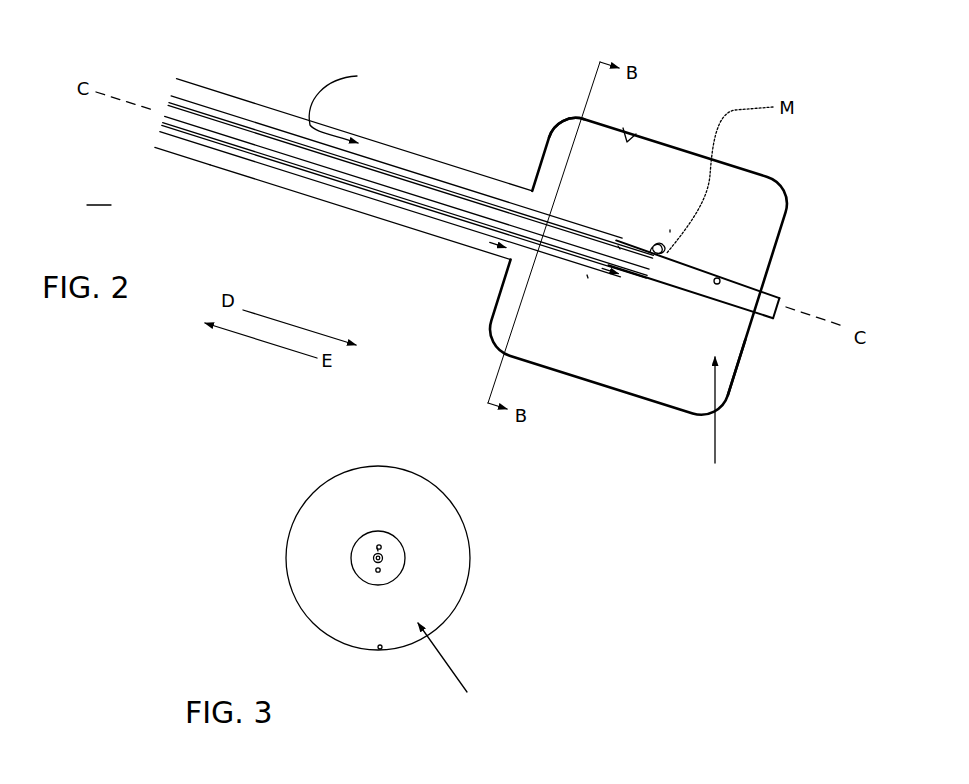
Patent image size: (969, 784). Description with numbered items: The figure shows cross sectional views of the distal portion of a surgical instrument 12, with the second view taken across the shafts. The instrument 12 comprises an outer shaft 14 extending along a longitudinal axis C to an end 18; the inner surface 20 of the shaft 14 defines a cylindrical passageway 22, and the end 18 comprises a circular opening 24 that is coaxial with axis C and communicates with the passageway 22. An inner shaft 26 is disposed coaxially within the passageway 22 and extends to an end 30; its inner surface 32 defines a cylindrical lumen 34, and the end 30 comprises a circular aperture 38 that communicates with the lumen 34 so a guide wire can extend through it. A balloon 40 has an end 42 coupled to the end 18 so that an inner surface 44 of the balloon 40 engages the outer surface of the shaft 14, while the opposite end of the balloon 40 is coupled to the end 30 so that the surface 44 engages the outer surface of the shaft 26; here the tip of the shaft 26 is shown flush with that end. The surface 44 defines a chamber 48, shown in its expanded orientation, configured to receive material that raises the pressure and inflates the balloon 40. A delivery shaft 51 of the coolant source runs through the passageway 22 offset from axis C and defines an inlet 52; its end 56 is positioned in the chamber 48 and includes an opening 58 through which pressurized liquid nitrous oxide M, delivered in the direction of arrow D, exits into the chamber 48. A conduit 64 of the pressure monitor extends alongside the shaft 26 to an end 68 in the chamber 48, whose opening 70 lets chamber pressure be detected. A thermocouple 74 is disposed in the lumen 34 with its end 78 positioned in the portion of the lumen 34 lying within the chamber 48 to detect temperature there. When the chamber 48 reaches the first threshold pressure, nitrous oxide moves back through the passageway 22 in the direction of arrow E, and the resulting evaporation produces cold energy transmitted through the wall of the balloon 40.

In FIG. 2, the surgical instrument 12 is at (99, 193).
In FIG. 2, the outer shaft 14 is at (442, 160).
In FIG. 2, the end 18 is at (306, 198).
In FIG. 2, the inner surface 20 is at (207, 167).
In FIG. 2, the passageway 22 is at (348, 106).
In FIG. 2, the circular opening 24 is at (505, 291).
In FIG. 2, the inner shaft 26 is at (758, 285).
In FIG. 3, the inner shaft 26 is at (446, 558).
In FIG. 2, the end 30 is at (738, 363).
In FIG. 2, the inner surface 32 is at (721, 278).
In FIG. 2, the lumen 34 is at (250, 136).
In FIG. 3, the lumen 34 is at (372, 556).
In FIG. 2, the circular aperture 38 is at (794, 307).
In FIG. 2, the balloon 40 is at (641, 432).
In FIG. 3, the balloon 40 is at (461, 602).
In FIG. 2, the end 42 is at (548, 135).
In FIG. 2, the inner surface 44 is at (572, 237).
In FIG. 3, the inner surface 44 is at (381, 650).
In FIG. 2, the chamber 48 is at (713, 421).
In FIG. 3, the chamber 48 is at (451, 667).
In FIG. 2, the delivery shaft 51 is at (405, 168).
In FIG. 3, the delivery shaft 51 is at (377, 548).
In FIG. 2, the inlet 52 is at (292, 134).
In FIG. 3, the inlet 52 is at (390, 545).
In FIG. 2, the end 56 is at (618, 246).
In FIG. 2, the opening 58 is at (668, 250).
In FIG. 2, the conduit 64 is at (352, 195).
In FIG. 3, the conduit 64 is at (375, 571).
In FIG. 2, the end 68 is at (587, 275).
In FIG. 2, the opening 70 is at (641, 432).
In FIG. 2, the thermocouple 74 is at (195, 127).
In FIG. 3, the thermocouple 74 is at (372, 558).
In FIG. 2, the end 78 is at (670, 230).